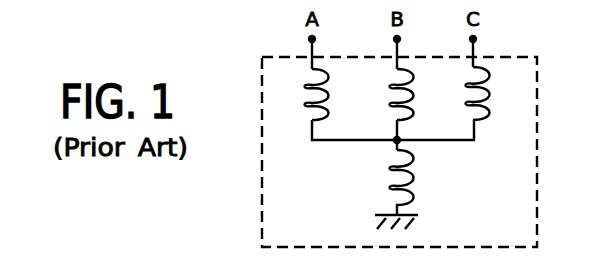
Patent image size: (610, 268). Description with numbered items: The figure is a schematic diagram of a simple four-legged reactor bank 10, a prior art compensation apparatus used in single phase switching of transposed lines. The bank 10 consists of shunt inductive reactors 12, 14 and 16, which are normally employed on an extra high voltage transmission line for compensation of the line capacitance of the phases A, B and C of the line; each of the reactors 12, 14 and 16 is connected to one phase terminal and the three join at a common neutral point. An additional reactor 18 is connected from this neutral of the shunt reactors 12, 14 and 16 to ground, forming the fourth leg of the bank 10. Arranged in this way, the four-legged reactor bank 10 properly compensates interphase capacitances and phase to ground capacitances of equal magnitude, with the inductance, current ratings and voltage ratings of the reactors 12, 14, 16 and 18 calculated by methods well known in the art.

The four-legged reactor bank 10 is at (539, 58).
The shunt inductive reactor 12 is at (330, 91).
The shunt inductive reactor 14 is at (414, 91).
The shunt inductive reactor 16 is at (490, 91).
The additional reactor 18 is at (414, 186).